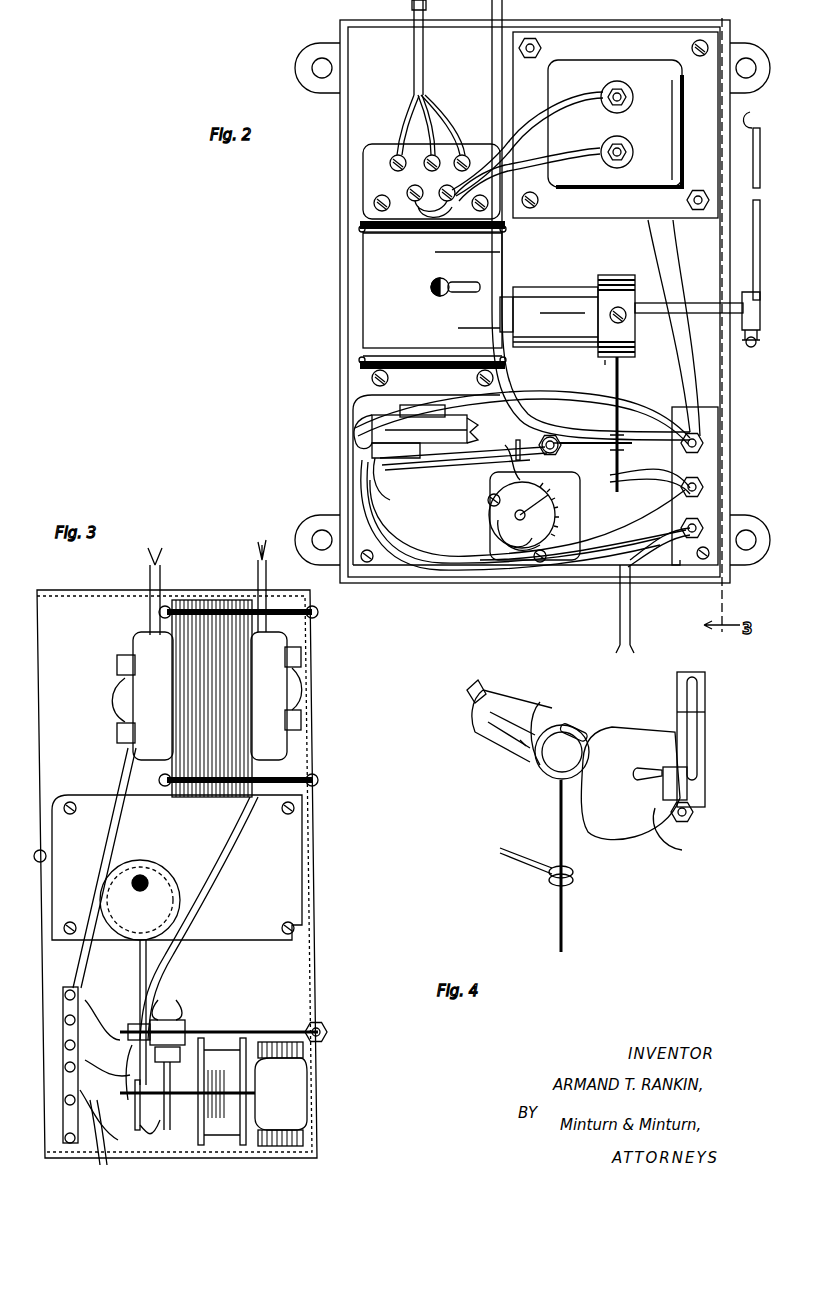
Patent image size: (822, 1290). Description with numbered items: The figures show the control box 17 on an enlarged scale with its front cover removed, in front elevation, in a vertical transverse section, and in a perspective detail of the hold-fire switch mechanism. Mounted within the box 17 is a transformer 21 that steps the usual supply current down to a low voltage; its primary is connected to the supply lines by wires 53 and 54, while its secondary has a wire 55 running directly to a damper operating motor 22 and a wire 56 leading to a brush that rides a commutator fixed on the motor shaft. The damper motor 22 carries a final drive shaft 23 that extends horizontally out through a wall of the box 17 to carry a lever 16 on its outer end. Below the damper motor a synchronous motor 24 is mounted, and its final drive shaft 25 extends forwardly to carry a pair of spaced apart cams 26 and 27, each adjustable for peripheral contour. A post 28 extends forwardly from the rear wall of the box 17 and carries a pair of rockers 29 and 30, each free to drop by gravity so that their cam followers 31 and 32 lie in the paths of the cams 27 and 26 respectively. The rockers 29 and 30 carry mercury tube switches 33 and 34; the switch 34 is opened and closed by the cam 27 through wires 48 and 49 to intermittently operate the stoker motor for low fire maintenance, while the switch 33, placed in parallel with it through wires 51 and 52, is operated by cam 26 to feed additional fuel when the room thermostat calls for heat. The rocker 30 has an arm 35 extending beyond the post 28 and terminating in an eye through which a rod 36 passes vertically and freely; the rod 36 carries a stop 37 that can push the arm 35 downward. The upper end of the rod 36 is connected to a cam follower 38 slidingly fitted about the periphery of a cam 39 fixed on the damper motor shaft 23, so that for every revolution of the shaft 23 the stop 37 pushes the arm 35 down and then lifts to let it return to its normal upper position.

In FIG. 2, the lever 16 is at (764, 348).
In FIG. 4, the lever 16 is at (700, 690).
In FIG. 2, the control box 17 is at (345, 351).
In FIG. 3, the control box 17 is at (316, 955).
In FIG. 4, the control box 17 is at (652, 732).
In FIG. 2, the transformer 21 is at (615, 109).
In FIG. 3, the transformer 21 is at (272, 733).
In FIG. 2, the damper operating motor 22 is at (373, 268).
In FIG. 3, the damper operating motor 22 is at (284, 893).
In FIG. 2, the final drive shaft 23 is at (688, 300).
In FIG. 3, the final drive shaft 23 is at (140, 878).
In FIG. 4, the final drive shaft 23 is at (490, 692).
In FIG. 2, the synchronous motor 24 is at (350, 497).
In FIG. 3, the synchronous motor 24 is at (300, 1082).
In FIG. 2, the final drive shaft 25 is at (540, 522).
In FIG. 3, the final drive shaft 25 is at (180, 1110).
In FIG. 2, the cam 26 is at (496, 538).
In FIG. 3, the cam 26 is at (142, 1130).
In FIG. 3, the cam 27 is at (153, 1138).
In FIG. 2, the post 28 is at (630, 369).
In FIG. 3, the post 28 is at (250, 1026).
In FIG. 2, the rocker 29 is at (472, 478).
In FIG. 3, the rocker 29 is at (180, 1016).
In FIG. 2, the rocker 30 is at (492, 448).
In FIG. 3, the rocker 30 is at (130, 1042).
In FIG. 2, the cam follower 31 is at (521, 460).
In FIG. 3, the cam follower 31 is at (174, 1088).
In FIG. 2, the cam follower 32 is at (497, 471).
In FIG. 3, the cam follower 32 is at (130, 1075).
In FIG. 2, the mercury tube switch 33 is at (444, 420).
In FIG. 3, the mercury tube switch 33 is at (132, 988).
In FIG. 2, the mercury tube switch 34 is at (380, 452).
In FIG. 3, the mercury tube switch 34 is at (168, 1000).
In FIG. 2, the arm 35 is at (596, 440).
In FIG. 4, the arm 35 is at (545, 874).
In FIG. 2, the rod 36 is at (622, 383).
In FIG. 3, the rod 36 is at (78, 955).
In FIG. 4, the rod 36 is at (561, 838).
In FIG. 4, the stop 37 is at (574, 870).
In FIG. 4, the cam follower 38 is at (548, 716).
In FIG. 4, the cam 39 is at (492, 725).
In FIG. 2, the wire 48 is at (464, 574).
In FIG. 2, the wire 49 is at (506, 392).
In FIG. 2, the wire 51 is at (450, 550).
In FIG. 2, the wire 52 is at (390, 490).
In FIG. 2, the wire 53 is at (705, 352).
In FIG. 2, the wire 54 is at (690, 327).
In FIG. 2, the wire 55 is at (575, 120).
In FIG. 2, the wire 56 is at (575, 66).